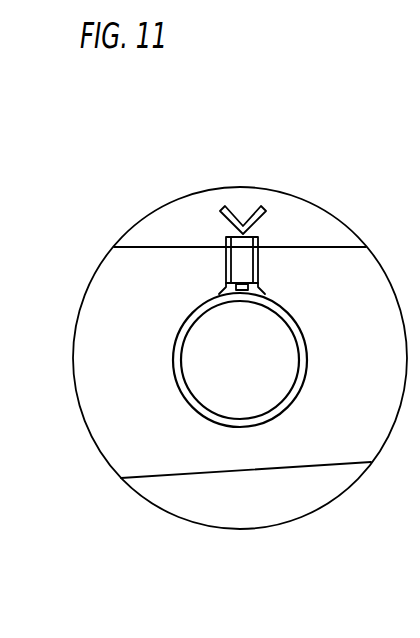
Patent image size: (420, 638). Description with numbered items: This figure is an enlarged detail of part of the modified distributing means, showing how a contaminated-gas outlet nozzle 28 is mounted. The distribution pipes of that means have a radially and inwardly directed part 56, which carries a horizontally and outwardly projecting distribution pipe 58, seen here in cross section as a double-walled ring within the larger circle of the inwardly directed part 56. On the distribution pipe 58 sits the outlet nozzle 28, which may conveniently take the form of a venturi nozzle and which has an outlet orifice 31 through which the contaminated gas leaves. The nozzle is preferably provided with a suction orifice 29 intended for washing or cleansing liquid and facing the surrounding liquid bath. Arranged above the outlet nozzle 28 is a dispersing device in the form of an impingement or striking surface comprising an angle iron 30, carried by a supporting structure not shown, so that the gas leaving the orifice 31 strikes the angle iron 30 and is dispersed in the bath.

The contaminated-gas outlet nozzle 28 is at (245, 262).
The suction orifice 29 is at (220, 291).
The angle iron 30 is at (265, 226).
The outlet orifice 31 is at (224, 236).
The radially and inwardly directed part 56 is at (173, 453).
The horizontally and outwardly projecting distribution pipe 58 is at (262, 397).